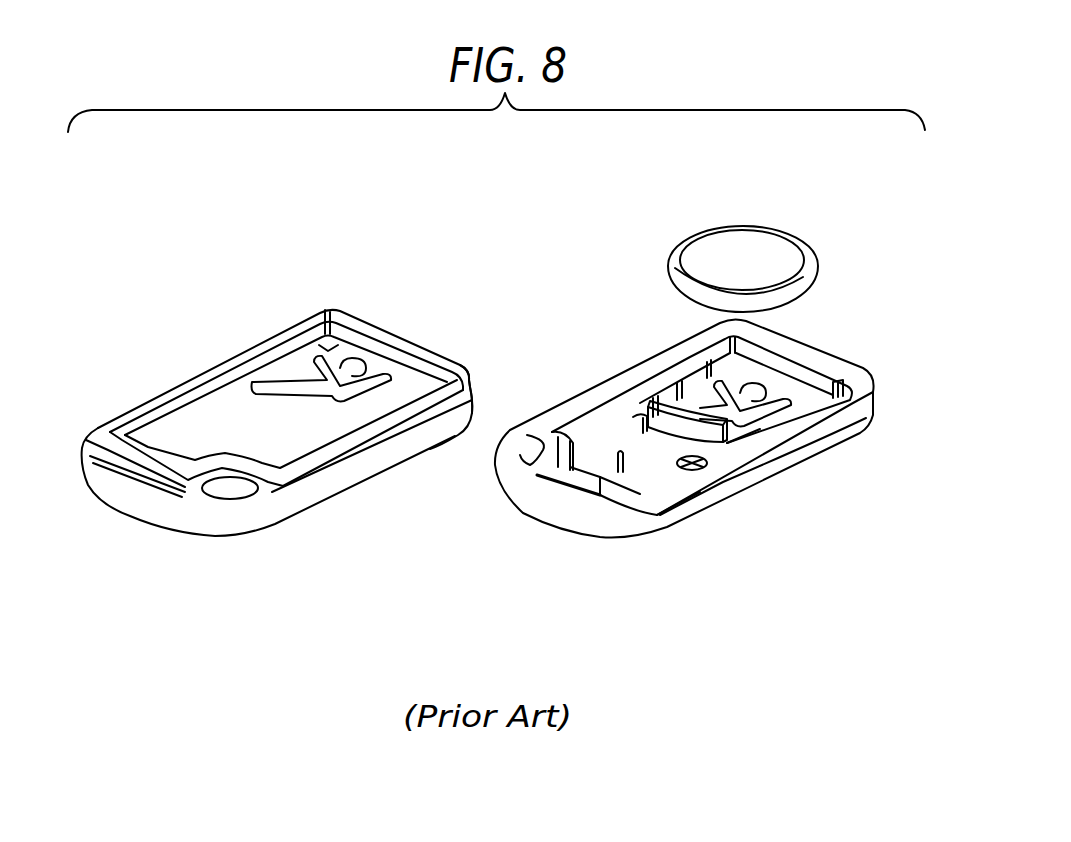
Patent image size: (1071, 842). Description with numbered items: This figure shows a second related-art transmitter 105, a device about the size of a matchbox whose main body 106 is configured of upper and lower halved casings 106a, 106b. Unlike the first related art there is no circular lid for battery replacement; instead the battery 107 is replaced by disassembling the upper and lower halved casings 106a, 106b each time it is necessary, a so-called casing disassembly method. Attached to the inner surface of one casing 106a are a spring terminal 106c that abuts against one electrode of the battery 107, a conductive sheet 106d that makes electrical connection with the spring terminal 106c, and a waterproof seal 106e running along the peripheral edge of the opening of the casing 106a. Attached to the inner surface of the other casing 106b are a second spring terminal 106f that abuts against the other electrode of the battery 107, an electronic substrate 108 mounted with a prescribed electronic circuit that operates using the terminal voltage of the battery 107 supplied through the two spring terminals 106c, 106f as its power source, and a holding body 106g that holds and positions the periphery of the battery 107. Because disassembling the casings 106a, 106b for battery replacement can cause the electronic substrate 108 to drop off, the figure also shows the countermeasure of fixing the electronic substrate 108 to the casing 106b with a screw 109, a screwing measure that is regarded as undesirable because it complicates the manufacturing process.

The transmitter 105 is at (850, 293).
The main body 106 is at (523, 602).
The upper halved casing 106a is at (295, 498).
The lower halved casing 106b is at (565, 502).
The spring terminal 106c is at (358, 367).
The conductive sheet 106d is at (198, 417).
The waterproof seal 106e is at (480, 360).
The spring terminal 106f is at (760, 392).
The holding body 106g is at (743, 453).
The battery 107 is at (710, 260).
The electronic substrate 108 is at (650, 483).
The screw 109 is at (697, 477).